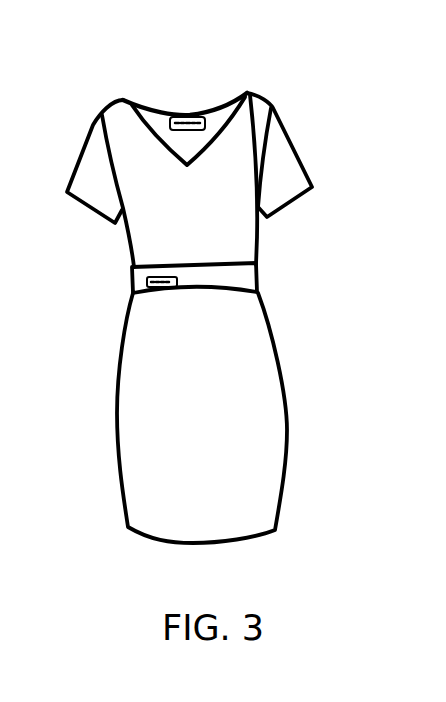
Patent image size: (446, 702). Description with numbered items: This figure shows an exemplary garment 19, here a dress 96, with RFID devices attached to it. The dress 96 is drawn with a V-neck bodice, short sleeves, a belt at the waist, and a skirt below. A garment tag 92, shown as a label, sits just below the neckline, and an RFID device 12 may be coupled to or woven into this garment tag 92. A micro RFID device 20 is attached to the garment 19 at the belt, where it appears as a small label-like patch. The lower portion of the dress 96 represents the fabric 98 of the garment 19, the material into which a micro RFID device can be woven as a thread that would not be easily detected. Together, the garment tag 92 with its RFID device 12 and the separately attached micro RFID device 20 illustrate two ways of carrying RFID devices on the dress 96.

The RFID device 12 is at (201, 278).
The garment 19 is at (115, 117).
The garment tag 92 is at (188, 117).
The dress 96 is at (205, 140).
The fabric 98 is at (240, 407).
The micro RFID device 20 is at (132, 293).